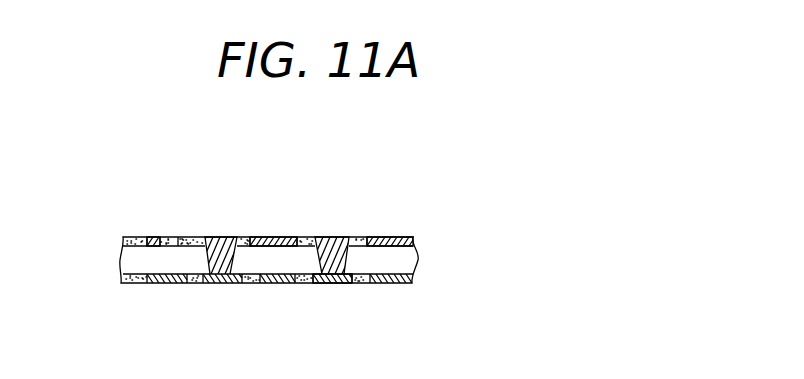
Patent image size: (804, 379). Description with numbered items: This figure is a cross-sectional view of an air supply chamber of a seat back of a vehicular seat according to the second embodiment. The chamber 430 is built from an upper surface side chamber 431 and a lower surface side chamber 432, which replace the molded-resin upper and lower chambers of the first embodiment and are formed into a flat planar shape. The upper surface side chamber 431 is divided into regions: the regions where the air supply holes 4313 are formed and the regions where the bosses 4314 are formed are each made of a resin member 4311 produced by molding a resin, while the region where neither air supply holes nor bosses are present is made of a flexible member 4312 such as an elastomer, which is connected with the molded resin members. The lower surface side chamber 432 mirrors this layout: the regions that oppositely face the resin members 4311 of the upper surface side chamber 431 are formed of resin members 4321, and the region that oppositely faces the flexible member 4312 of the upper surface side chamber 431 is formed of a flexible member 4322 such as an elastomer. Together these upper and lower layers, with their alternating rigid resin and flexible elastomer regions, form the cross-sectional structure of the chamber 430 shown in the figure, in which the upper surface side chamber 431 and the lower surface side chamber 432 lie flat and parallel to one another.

The chamber 430 is at (523, 232).
The upper surface side chamber 431 is at (413, 239).
The lower surface side chamber 432 is at (413, 280).
The resin member 4311 is at (273, 213).
The flexible member 4312 is at (358, 237).
The air supply holes 4313 is at (163, 237).
The bosses 4314 is at (208, 267).
The resin members 4321 is at (217, 283).
The flexible member 4322 is at (360, 283).